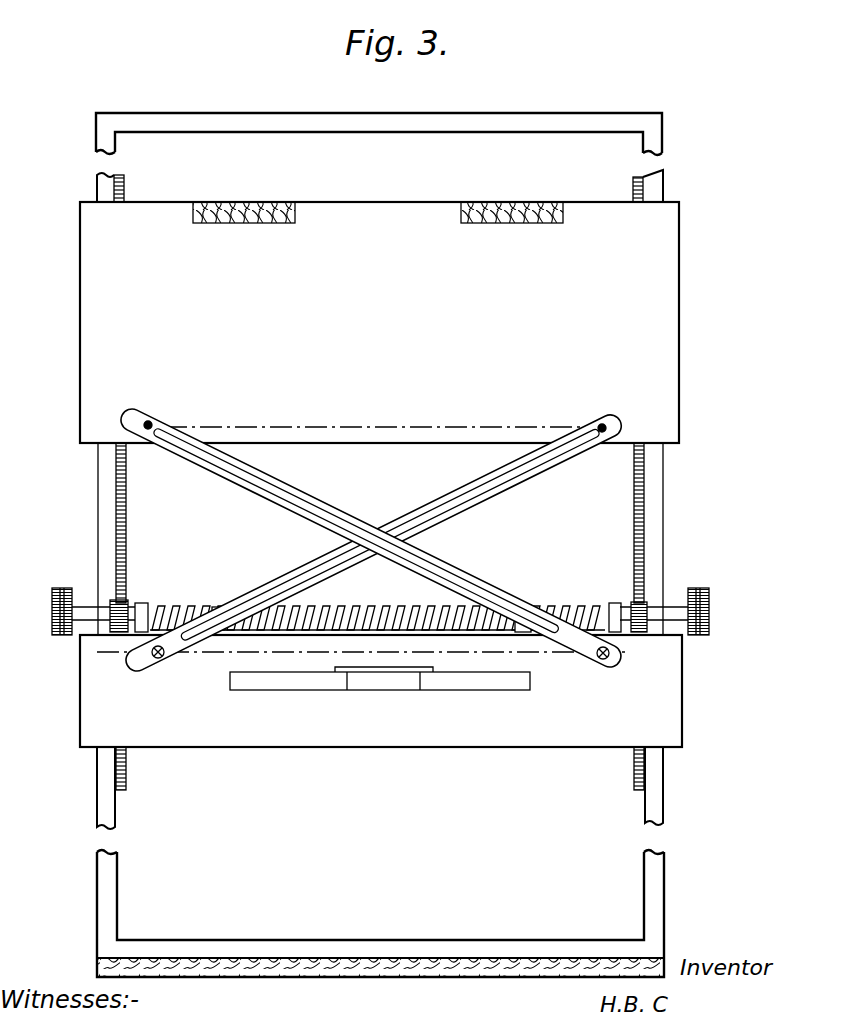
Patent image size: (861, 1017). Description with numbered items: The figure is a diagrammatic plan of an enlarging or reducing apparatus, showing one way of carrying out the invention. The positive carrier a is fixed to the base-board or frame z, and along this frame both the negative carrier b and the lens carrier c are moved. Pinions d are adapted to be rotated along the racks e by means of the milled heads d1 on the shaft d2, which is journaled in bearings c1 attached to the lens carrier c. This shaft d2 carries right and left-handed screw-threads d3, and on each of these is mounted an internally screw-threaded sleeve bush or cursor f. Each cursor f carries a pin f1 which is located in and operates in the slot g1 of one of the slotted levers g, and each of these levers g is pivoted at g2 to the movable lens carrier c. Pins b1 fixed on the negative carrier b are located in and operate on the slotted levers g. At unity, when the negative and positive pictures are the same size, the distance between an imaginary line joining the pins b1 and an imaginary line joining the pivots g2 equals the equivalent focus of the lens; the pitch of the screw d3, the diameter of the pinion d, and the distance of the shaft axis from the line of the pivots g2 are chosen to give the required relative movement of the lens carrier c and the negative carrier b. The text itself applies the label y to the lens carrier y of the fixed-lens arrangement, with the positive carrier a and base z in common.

The positive carrier a is at (430, 976).
The negative carrier b is at (379, 322).
The pins b1 is at (590, 400).
The lens carrier c is at (381, 691).
The bearings c1 is at (609, 585).
The pinions d is at (110, 612).
The milled heads d1 is at (705, 640).
The shaft d2 is at (712, 573).
The right and left-handed screw-threads d3 is at (575, 580).
The racks e is at (680, 497).
The sleeve bush or cursor f is at (519, 605).
The pin f1 is at (563, 670).
The slotted levers g is at (470, 497).
The slot g1 is at (440, 568).
The pivot g2 is at (625, 690).
The lens carrier y is at (375, 678).
The base-board or frame z is at (390, 122).